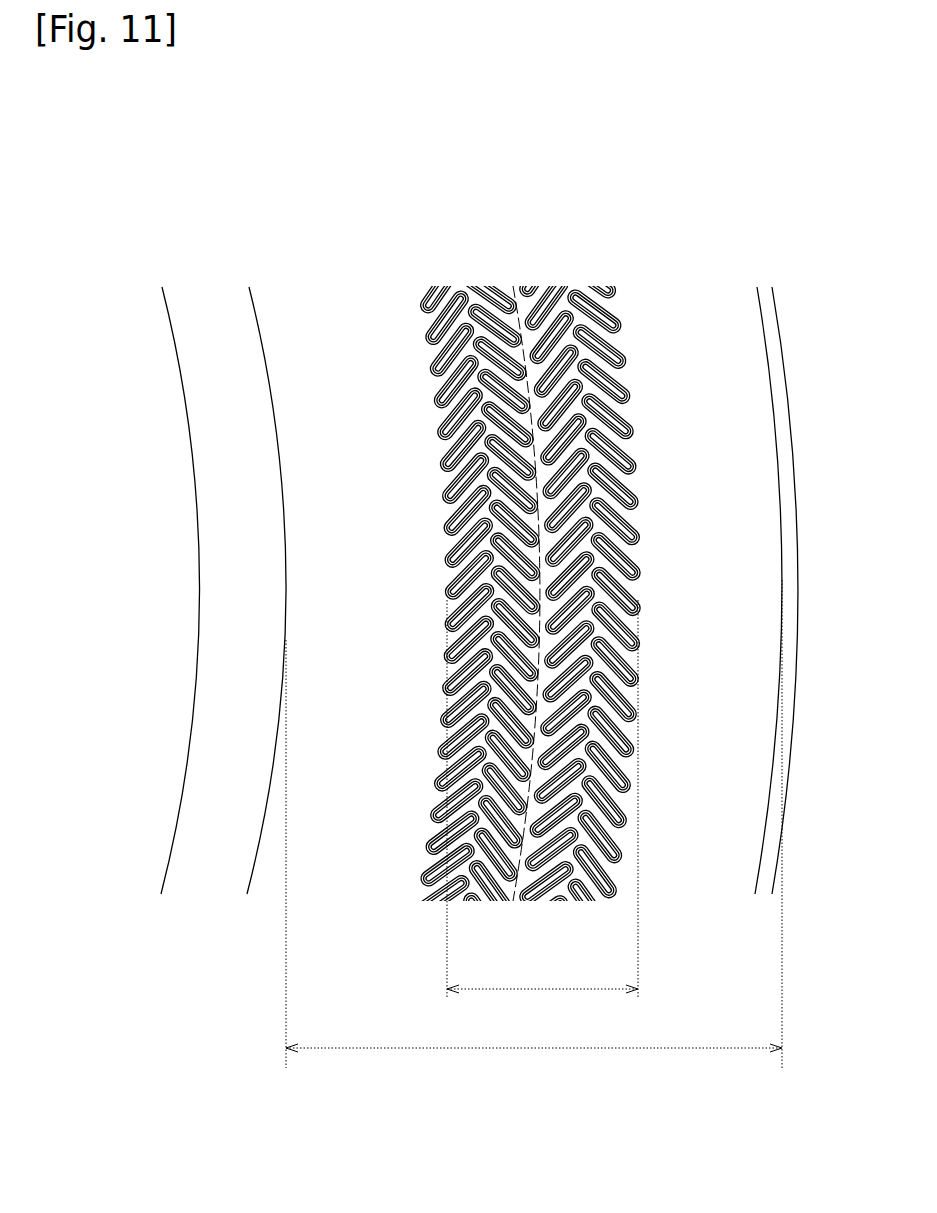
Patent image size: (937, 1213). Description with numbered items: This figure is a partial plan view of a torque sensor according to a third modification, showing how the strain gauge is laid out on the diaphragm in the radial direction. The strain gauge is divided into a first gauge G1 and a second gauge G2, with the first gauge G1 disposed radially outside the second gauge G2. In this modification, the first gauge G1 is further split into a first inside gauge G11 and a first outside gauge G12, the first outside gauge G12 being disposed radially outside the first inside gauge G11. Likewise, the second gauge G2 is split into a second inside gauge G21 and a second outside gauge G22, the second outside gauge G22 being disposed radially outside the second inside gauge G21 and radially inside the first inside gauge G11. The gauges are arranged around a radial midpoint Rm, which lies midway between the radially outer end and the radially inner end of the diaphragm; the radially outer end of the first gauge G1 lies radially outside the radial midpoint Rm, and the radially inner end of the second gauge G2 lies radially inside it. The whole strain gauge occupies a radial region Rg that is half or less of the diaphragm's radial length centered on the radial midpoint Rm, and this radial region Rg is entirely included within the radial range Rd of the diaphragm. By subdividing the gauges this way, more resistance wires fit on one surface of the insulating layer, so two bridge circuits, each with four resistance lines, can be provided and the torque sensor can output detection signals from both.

The first gauge G1 is at (631, 592).
The first inside gauge G11 is at (600, 519).
The first outside gauge G12 is at (625, 450).
The second gauge G2 is at (435, 590).
The second inside gauge G21 is at (448, 443).
The second outside gauge G22 is at (497, 497).
The radial midpoint Rm is at (512, 278).
The radial region Rg is at (542, 813).
The radial range Rd is at (534, 831).